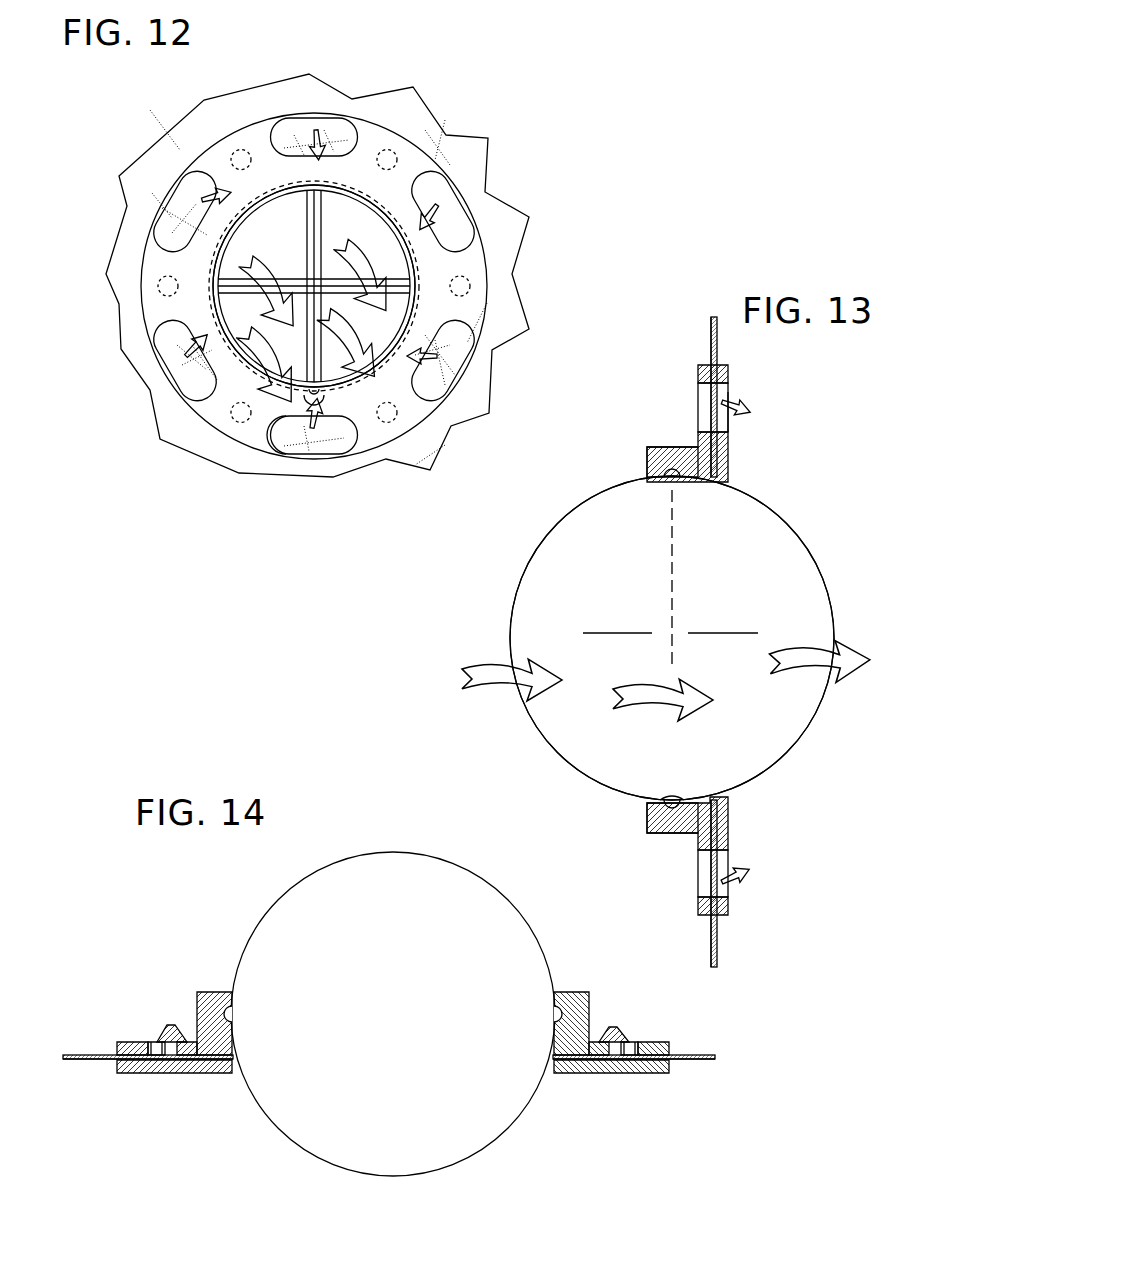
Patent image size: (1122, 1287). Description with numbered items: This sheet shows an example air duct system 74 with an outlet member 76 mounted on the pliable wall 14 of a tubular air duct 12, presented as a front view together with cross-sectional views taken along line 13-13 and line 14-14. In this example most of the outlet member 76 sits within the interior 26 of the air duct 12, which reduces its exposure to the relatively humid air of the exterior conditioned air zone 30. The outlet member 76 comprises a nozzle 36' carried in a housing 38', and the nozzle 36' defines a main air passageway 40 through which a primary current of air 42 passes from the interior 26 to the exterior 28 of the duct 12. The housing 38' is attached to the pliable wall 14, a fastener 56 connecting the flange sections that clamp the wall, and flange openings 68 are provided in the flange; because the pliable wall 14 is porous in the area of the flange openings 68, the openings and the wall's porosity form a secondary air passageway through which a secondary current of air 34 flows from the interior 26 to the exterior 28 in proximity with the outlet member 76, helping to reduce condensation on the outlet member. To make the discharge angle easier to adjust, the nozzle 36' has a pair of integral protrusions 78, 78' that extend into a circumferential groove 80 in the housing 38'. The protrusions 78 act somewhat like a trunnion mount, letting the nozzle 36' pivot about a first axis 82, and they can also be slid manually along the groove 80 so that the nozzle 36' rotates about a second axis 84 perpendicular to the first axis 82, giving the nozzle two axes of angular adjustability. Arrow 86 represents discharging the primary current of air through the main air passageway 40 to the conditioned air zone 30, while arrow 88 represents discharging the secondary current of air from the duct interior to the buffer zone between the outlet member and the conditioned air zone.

In FIG. 13, the tubular air duct 12 is at (710, 339).
In FIG. 14, the tubular air duct 12 is at (100, 1055).
In FIG. 12, the section line 13 is at (313, 100).
In FIG. 12, the pliable wall 14 is at (77, 282).
In FIG. 13, the pliable wall 14 is at (710, 350).
In FIG. 14, the pliable wall 14 is at (82, 1055).
In FIG. 13, the interior 26 is at (686, 867).
In FIG. 13, the exterior 28 is at (775, 821).
In FIG. 13, the exterior conditioned air zone 30 is at (865, 727).
In FIG. 12, the secondary current of air 34 is at (215, 207).
In FIG. 13, the secondary current of air 34 is at (747, 420).
In FIG. 12, the nozzle 36' is at (314, 218).
In FIG. 13, the nozzle 36' is at (657, 638).
In FIG. 14, the nozzle 36' is at (370, 1014).
In FIG. 12, the housing 38' is at (307, 357).
In FIG. 13, the housing 38' is at (635, 464).
In FIG. 14, the housing 38' is at (611, 1002).
In FIG. 12, the main air passageway 40 is at (296, 254).
In FIG. 12, the primary current of air 42 is at (263, 347).
In FIG. 13, the primary current of air 42 is at (852, 632).
In FIG. 12, the fastener 56 is at (239, 152).
In FIG. 14, the fastener 56 is at (622, 1027).
In FIG. 12, the flange opening 68 is at (284, 462).
In FIG. 13, the flange opening 68 is at (725, 392).
In FIG. 12, the air duct system 74 is at (550, 123).
In FIG. 12, the outlet member 76 is at (437, 162).
In FIG. 13, the outlet member 76 is at (745, 488).
In FIG. 14, the outlet member 76 is at (210, 990).
In FIG. 12, the integral protrusions 78 is at (355, 391).
In FIG. 13, the integral protrusions 78 is at (637, 622).
In FIG. 12, the detent ring 78' is at (314, 272).
In FIG. 13, the circumferential groove 80 is at (668, 812).
In FIG. 14, the circumferential groove 80 is at (225, 1013).
In FIG. 13, the first axis 82 is at (668, 530).
In FIG. 13, the second axis 84 is at (628, 633).
In FIG. 12, the arrow 86 is at (372, 260).
In FIG. 13, the arrow 86 is at (867, 658).
In FIG. 12, the arrow 88 is at (435, 377).
In FIG. 13, the arrow 88 is at (752, 412).